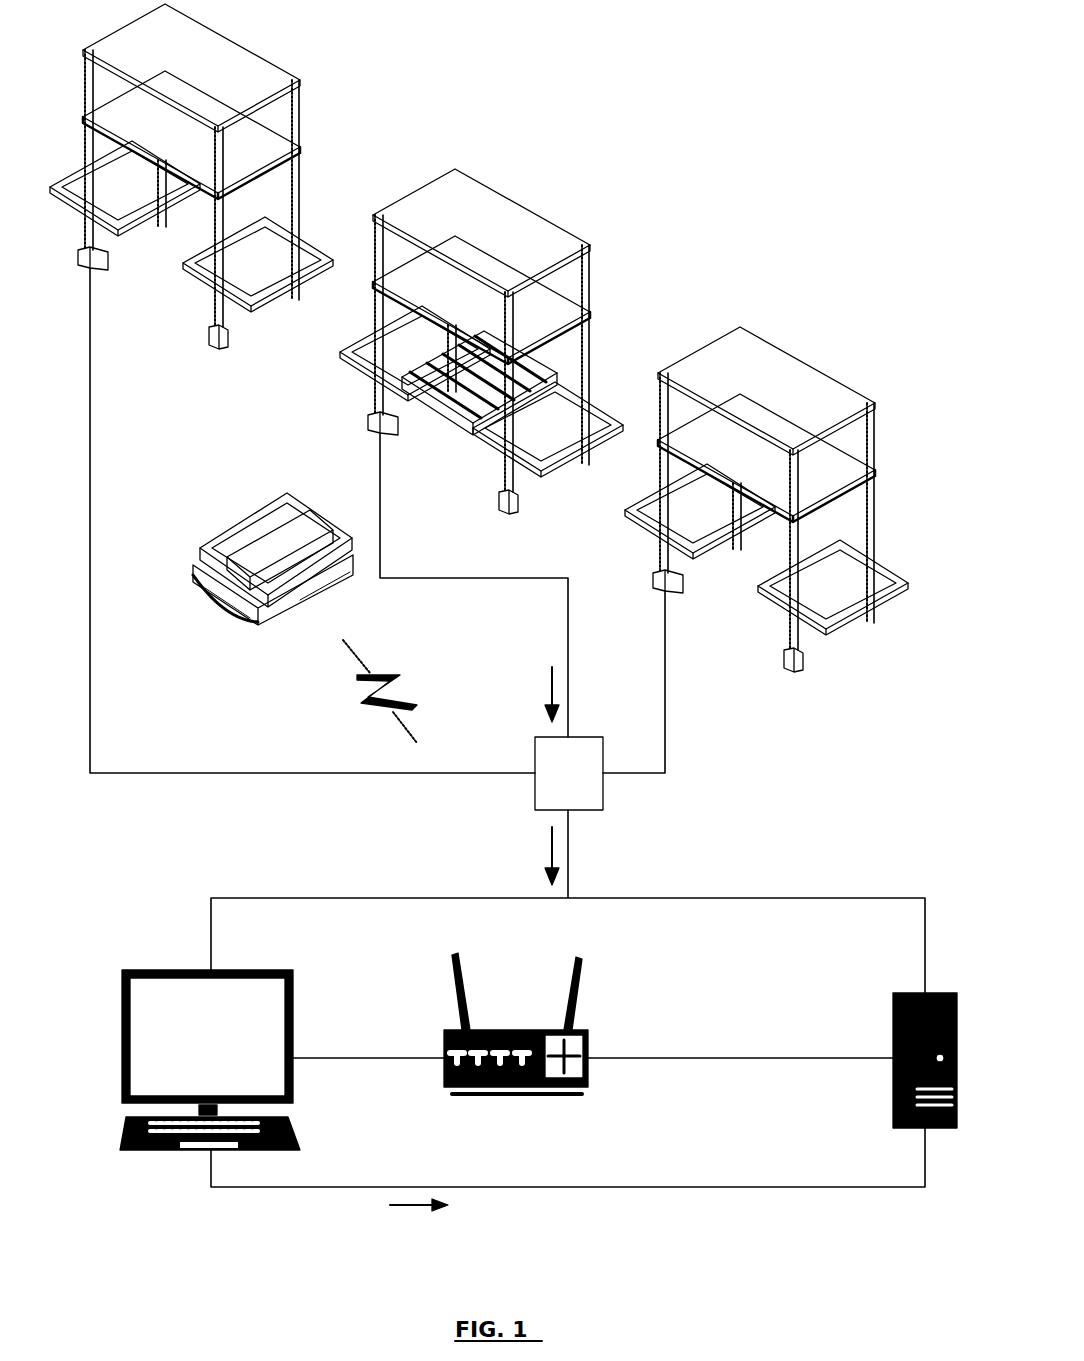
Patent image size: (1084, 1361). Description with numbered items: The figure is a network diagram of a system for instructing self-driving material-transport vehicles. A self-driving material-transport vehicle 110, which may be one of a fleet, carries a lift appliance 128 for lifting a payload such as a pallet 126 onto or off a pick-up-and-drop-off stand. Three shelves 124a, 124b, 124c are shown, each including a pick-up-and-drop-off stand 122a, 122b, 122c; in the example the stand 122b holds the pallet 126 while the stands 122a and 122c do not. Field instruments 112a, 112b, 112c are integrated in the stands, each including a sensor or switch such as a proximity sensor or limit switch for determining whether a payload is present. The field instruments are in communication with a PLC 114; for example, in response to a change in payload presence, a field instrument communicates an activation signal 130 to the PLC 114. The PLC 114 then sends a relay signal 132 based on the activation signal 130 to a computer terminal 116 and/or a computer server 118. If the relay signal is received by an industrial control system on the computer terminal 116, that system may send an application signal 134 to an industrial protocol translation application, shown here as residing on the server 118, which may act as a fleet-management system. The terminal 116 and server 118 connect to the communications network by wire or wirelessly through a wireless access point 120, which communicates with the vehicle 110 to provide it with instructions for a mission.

The self-driving material-transport vehicle 110 is at (195, 585).
The field instrument 112a is at (135, 220).
The field instrument 112b is at (423, 402).
The field instrument 112c is at (697, 548).
The PLC 114 is at (569, 773).
The computer terminal 116 is at (122, 1060).
The computer server 118 is at (893, 1023).
The wireless access point 120 is at (444, 1040).
The pick-up-and-drop-off stand 122a is at (270, 293).
The pick-up-and-drop-off stand 122b is at (560, 457).
The pick-up-and-drop-off stand 122c is at (838, 618).
The shelf 124a is at (214, 53).
The shelf 124b is at (498, 213).
The shelf 124c is at (752, 375).
The pallet 126 is at (540, 363).
The lift appliance 128 is at (248, 525).
The activation signal 130 is at (552, 680).
The relay signal 132 is at (552, 843).
The application signal 134 is at (410, 1205).